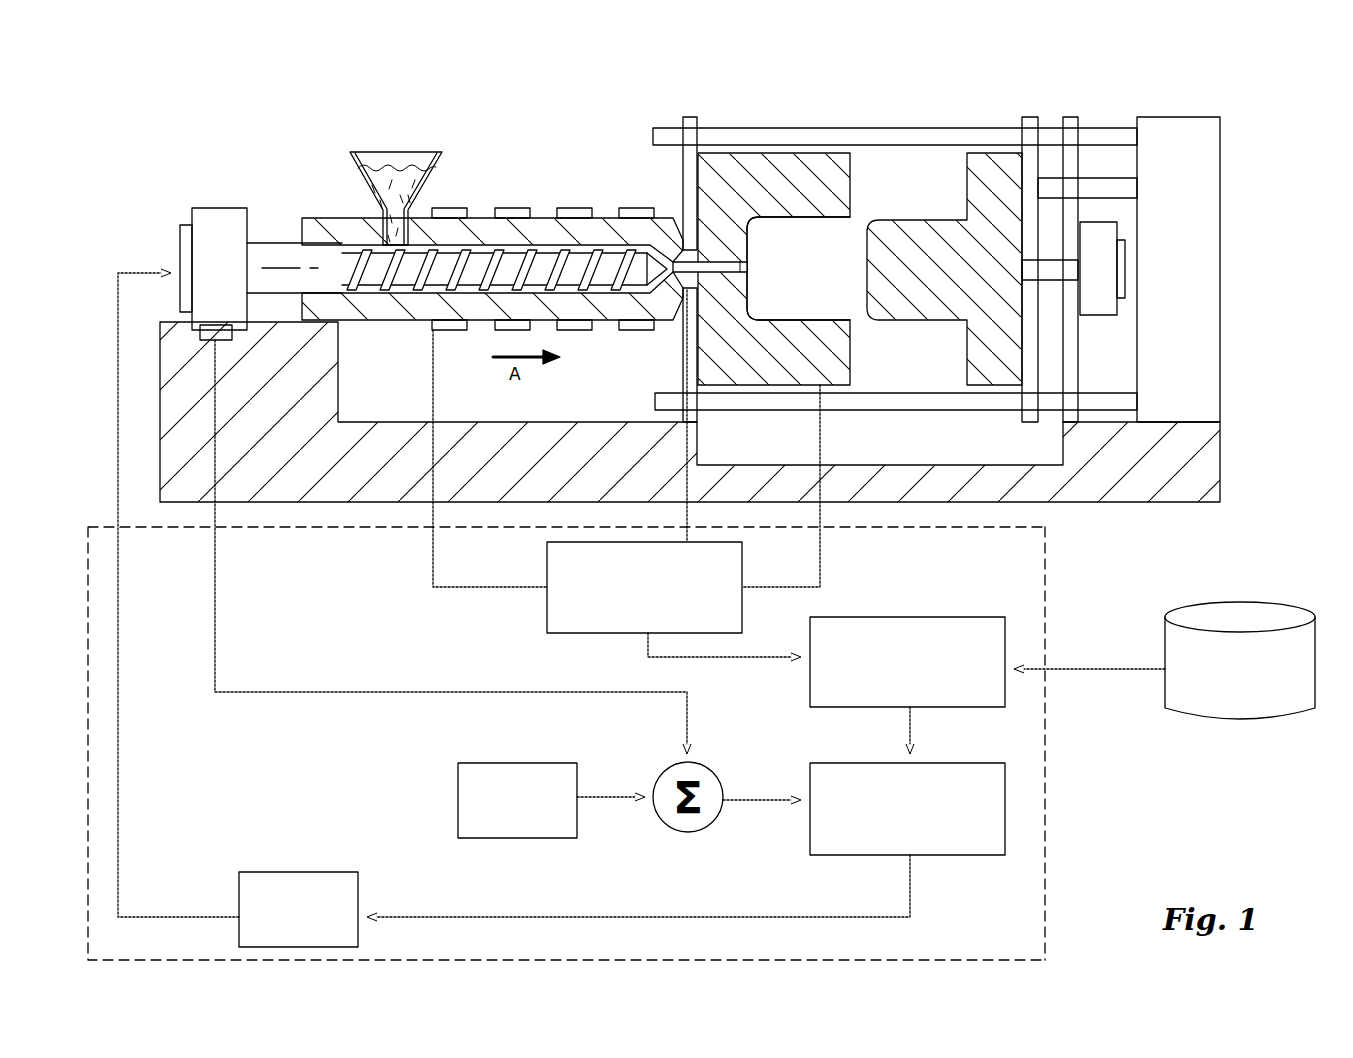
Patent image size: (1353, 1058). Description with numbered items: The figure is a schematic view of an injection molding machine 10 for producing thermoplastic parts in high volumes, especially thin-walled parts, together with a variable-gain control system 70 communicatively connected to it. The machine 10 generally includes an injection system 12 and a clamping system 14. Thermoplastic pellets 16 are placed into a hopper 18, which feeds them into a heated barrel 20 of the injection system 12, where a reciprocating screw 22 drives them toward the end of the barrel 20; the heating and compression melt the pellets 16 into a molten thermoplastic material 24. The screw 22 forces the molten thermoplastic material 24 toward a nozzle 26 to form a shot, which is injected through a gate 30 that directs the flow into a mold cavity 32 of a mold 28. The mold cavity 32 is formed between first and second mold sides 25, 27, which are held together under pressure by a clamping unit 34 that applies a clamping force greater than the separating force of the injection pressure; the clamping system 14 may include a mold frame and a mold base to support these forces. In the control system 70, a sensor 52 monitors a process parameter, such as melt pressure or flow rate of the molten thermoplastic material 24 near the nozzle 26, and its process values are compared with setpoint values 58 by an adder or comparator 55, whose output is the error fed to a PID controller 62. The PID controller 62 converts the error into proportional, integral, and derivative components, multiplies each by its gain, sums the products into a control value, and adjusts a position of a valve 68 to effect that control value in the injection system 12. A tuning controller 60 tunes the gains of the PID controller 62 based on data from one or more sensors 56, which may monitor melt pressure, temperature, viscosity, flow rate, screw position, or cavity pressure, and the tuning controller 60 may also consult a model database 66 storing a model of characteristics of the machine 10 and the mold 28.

The injection molding machine 10 is at (492, 93).
The injection system 12 is at (459, 360).
The clamping system 14 is at (1190, 524).
The thermoplastic pellets 16 is at (366, 184).
The hopper 18 is at (395, 151).
The heated barrel 20 is at (541, 209).
The reciprocating screw 22 is at (404, 294).
The molten thermoplastic material 24 is at (609, 244).
The first mold side 25 is at (773, 376).
The nozzle 26 is at (701, 262).
The second mold side 27 is at (941, 320).
The mold 28 is at (860, 274).
The gate 30 is at (746, 267).
The mold cavity 32 is at (813, 223).
The clamping unit 34 is at (1144, 94).
The sensor 52 is at (214, 340).
The adder or comparator 55 is at (676, 763).
The sensors 56 is at (547, 613).
The setpoint values 58 is at (458, 798).
The tuning controller 60 is at (810, 690).
The PID controller 62 is at (810, 846).
The model database 66 is at (1165, 632).
The valve 68 is at (239, 880).
The variable-gain control system 70 is at (1045, 818).